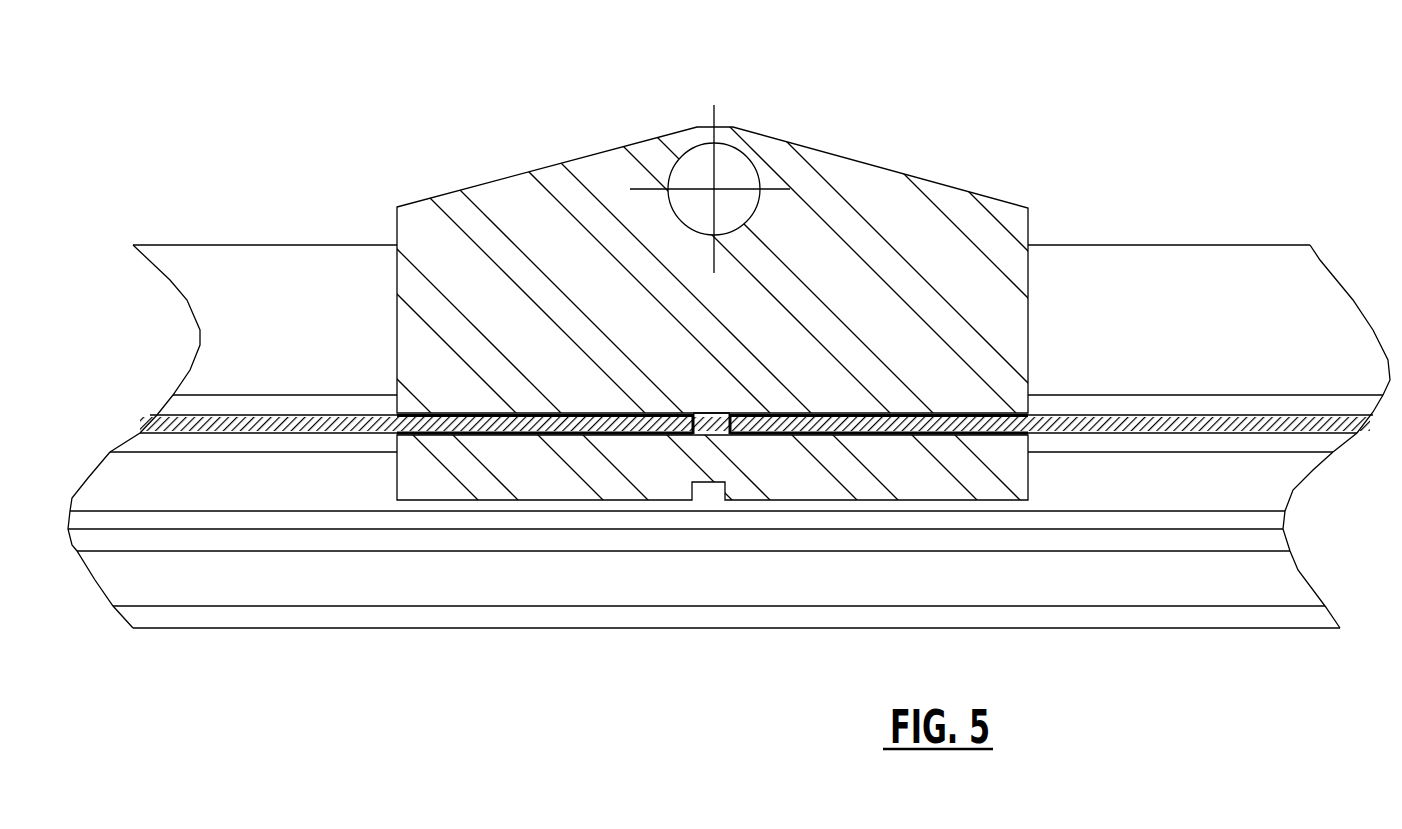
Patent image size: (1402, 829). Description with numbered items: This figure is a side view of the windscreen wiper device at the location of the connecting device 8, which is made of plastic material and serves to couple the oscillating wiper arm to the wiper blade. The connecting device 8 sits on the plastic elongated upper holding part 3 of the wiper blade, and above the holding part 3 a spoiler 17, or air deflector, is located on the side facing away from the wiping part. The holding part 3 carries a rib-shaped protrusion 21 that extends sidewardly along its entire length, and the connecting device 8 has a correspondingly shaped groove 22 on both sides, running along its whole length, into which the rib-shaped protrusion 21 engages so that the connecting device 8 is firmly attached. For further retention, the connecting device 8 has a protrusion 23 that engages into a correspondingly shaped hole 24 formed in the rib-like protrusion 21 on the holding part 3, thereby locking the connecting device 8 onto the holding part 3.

The holding part 3 is at (1282, 487).
The connecting device 8 is at (950, 187).
The spoiler 17 is at (1157, 267).
The rib-shaped protrusion 21 is at (1110, 418).
The groove 22 is at (1027, 413).
The protrusion 23 is at (710, 423).
The hole 24 is at (733, 413).